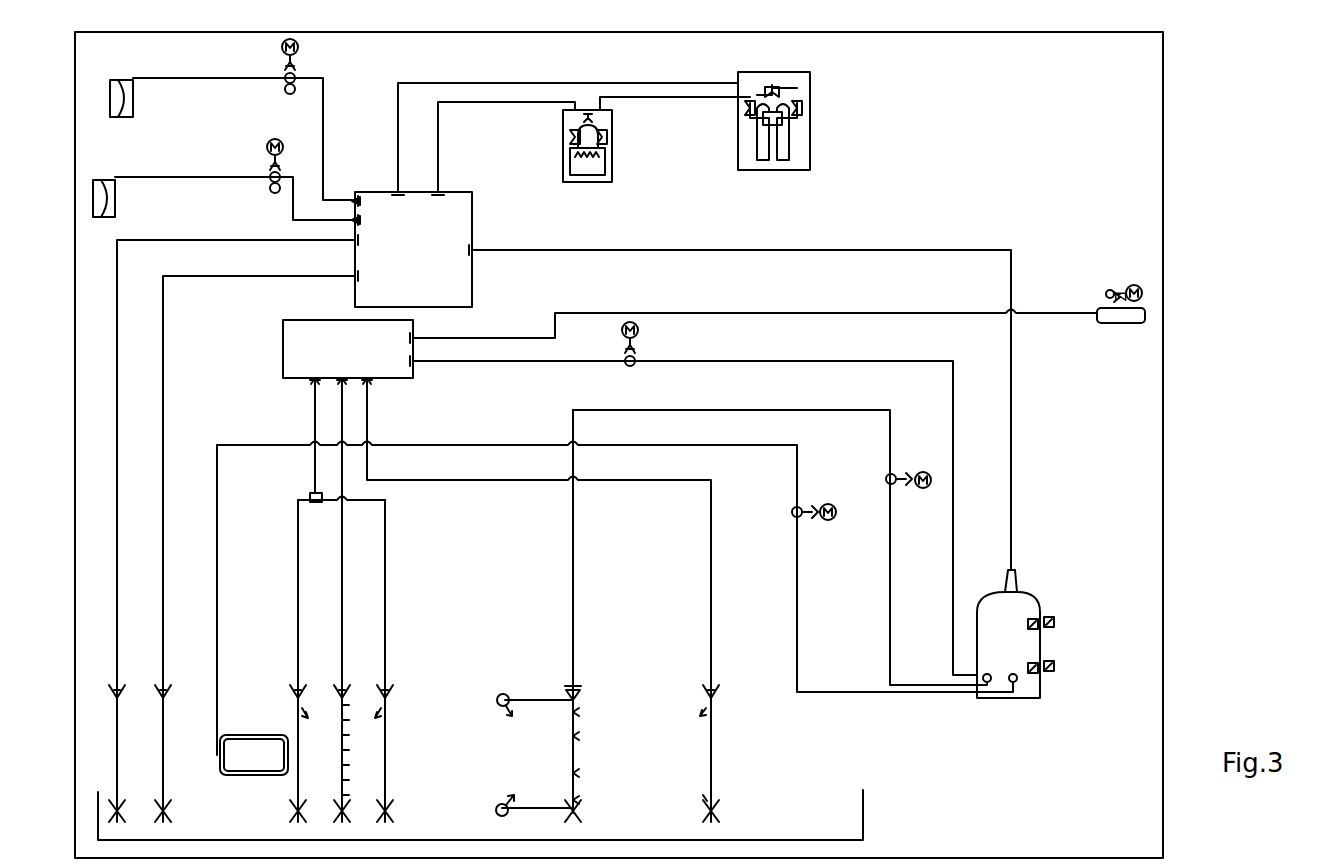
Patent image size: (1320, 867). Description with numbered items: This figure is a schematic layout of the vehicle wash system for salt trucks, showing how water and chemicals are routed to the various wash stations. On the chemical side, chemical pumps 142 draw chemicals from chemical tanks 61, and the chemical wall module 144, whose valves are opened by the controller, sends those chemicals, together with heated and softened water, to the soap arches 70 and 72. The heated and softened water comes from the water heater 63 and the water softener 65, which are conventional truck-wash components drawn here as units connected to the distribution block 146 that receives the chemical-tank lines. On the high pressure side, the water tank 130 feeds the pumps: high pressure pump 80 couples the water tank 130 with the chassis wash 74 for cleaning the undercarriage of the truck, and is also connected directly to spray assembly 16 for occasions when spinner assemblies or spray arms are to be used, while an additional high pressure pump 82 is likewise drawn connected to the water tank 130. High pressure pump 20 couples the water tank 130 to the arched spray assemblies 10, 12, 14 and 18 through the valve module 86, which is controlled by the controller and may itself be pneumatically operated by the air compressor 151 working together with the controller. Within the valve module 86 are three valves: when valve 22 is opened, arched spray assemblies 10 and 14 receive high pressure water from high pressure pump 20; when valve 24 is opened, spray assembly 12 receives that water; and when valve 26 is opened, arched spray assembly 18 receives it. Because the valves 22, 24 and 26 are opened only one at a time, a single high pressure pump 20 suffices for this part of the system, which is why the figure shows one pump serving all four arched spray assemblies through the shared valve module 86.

The chemical tanks 61 is at (133, 102).
The chemical pumps 142 is at (296, 80).
The chemical wall module 144 is at (362, 200).
The water distribution block 146 is at (418, 298).
The water heater 63 is at (605, 145).
The water softener 65 is at (800, 145).
The valve module 86 is at (300, 348).
The valve 22 is at (310, 381).
The valve 24 is at (340, 383).
The valve 26 is at (372, 382).
The high pressure pump 20 is at (638, 365).
The air compressor 151 is at (1117, 325).
The water tank 130 is at (1020, 645).
The high pressure pump 80 is at (790, 517).
The high pressure pump 82 is at (886, 481).
The soap arch 70 is at (115, 782).
The soap arch 72 is at (160, 782).
The chassis wash 74 is at (258, 735).
The arched spray assembly 10 is at (311, 793).
The arched spray assembly 12 is at (348, 795).
The arched spray assembly 14 is at (386, 789).
The spray assembly 16 is at (578, 720).
The arched spray assembly 18 is at (711, 745).